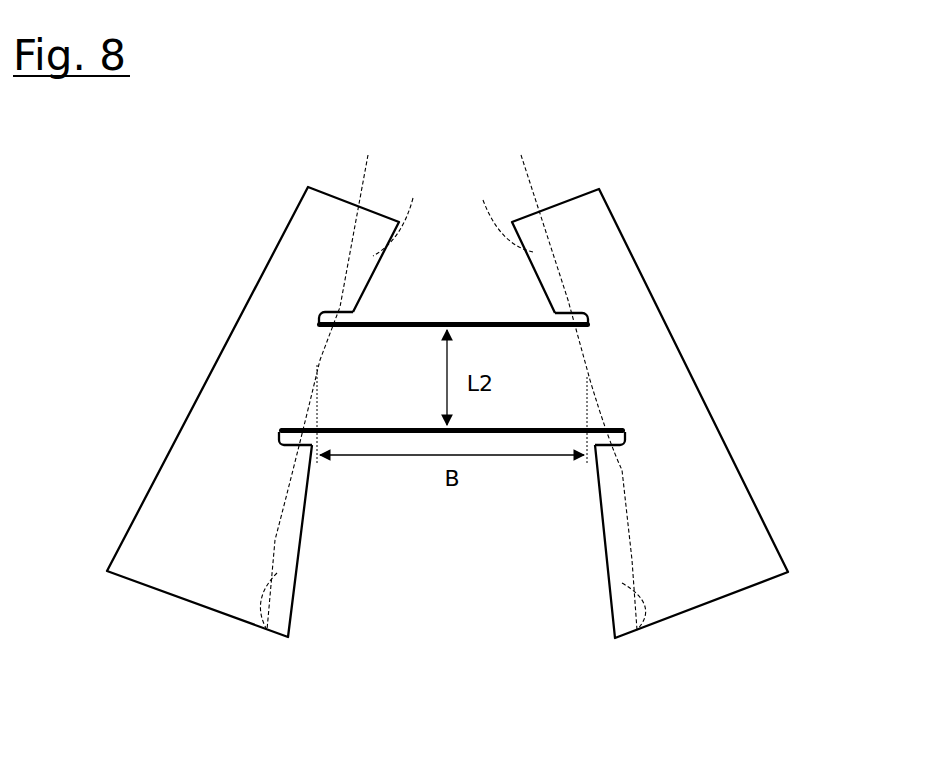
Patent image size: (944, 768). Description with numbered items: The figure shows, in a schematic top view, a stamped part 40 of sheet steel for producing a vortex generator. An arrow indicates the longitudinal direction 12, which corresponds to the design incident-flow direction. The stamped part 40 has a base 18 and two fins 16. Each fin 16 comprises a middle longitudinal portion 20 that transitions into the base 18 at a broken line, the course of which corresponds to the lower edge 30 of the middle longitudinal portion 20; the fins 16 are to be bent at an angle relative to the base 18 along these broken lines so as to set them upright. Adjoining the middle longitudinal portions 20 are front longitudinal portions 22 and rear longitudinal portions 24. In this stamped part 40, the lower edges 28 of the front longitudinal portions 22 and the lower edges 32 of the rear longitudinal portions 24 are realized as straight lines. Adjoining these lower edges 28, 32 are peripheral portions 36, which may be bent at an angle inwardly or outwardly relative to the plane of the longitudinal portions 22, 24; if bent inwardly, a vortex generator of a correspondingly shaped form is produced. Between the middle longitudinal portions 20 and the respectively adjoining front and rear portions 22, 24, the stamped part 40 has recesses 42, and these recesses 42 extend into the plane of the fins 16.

The longitudinal direction 12 is at (725, 112).
The fins 16 is at (170, 470).
The base 18 is at (427, 352).
The middle longitudinal portions 20 is at (247, 378).
The front longitudinal portions 22 is at (320, 248).
The rear longitudinal portions 24 is at (190, 547).
The lower edges of the front longitudinal portions 28 is at (452, 378).
The lower edges of the middle longitudinal portions 30 is at (253, 483).
The lower edges of the rear longitudinal portions 32 is at (257, 620).
The peripheral portions 36 is at (317, 657).
The stamped part 40 is at (162, 246).
The recesses 42 is at (350, 320).